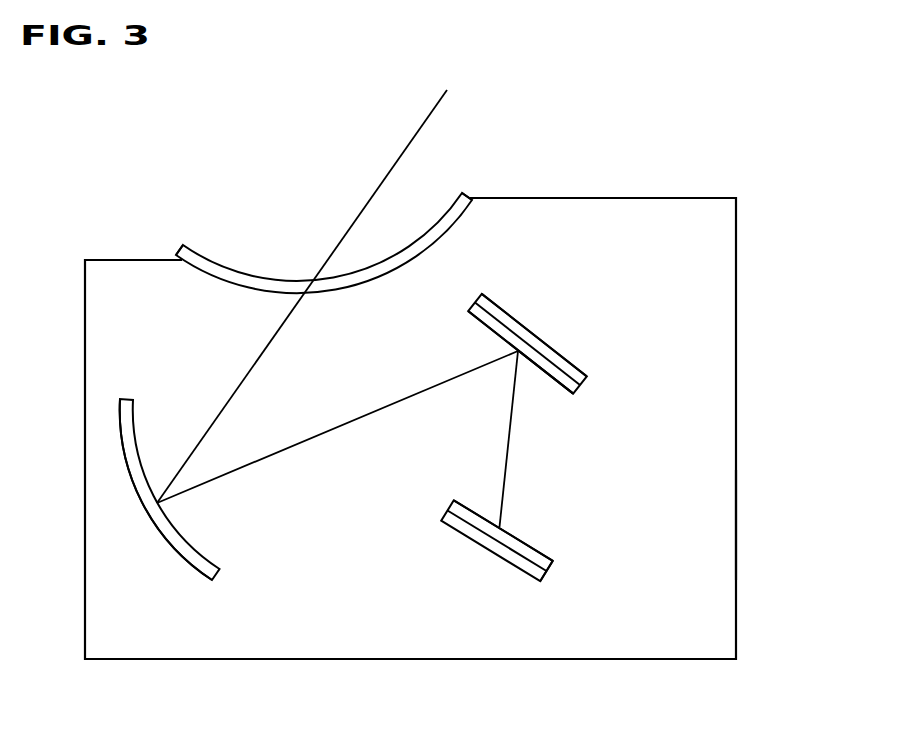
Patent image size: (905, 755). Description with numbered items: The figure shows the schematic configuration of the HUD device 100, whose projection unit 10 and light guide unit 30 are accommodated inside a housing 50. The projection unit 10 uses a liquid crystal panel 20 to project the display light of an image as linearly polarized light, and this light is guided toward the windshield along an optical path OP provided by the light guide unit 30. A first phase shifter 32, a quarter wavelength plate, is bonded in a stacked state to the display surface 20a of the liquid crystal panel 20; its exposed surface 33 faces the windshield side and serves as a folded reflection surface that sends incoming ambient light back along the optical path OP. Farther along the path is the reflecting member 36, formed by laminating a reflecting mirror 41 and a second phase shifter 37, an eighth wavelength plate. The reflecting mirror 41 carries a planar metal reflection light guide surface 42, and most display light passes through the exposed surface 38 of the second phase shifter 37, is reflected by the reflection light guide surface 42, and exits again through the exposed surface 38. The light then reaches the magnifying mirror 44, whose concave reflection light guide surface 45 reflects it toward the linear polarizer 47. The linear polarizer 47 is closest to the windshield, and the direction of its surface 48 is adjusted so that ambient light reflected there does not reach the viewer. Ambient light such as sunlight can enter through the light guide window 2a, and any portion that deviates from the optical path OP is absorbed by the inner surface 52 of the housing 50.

The HUD device 100 is at (693, 137).
The housing 50 is at (736, 332).
The inner surface 52 is at (724, 538).
The light guide unit 30 is at (195, 177).
The surface 48 is at (260, 278).
The light guide window 2a is at (198, 252).
The linear polarizer 47 is at (445, 208).
The optical path OP is at (250, 370).
The reflecting member 36 is at (653, 378).
The reflection light guide surface 42 is at (497, 321).
The reflecting mirror 41 is at (587, 377).
The second phase shifter 37 is at (576, 393).
The exposed surface 38 is at (552, 379).
The projection unit 10 is at (533, 529).
The liquid crystal panel 20 is at (543, 581).
The display surface 20a is at (468, 522).
The exposed surface 33 is at (528, 542).
The first phase shifter 32 is at (552, 562).
The magnifying mirror 44 is at (218, 578).
The reflection light guide surface 45 is at (197, 552).